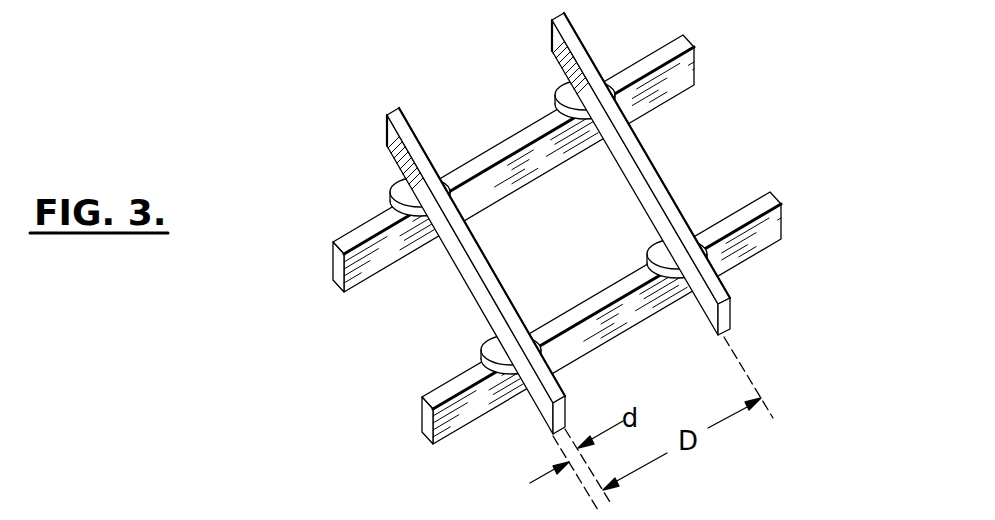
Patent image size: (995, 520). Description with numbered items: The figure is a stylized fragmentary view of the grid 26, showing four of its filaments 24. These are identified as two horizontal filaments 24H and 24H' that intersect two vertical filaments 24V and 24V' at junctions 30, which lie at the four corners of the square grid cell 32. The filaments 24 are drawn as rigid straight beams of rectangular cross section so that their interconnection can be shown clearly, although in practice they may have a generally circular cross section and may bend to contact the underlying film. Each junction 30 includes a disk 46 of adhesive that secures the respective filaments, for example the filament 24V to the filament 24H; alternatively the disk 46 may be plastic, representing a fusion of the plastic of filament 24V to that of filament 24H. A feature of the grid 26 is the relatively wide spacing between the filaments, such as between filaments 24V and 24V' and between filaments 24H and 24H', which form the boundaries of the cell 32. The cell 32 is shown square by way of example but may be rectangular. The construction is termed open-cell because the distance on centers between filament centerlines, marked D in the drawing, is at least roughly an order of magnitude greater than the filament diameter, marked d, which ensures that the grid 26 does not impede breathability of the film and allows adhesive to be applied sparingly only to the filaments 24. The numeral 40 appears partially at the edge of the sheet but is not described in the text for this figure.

The filament 24 is at (576, 237).
The vertical filament 24V is at (432, 256).
The vertical filament 24V' is at (572, 174).
The horizontal filament 24H is at (559, 163).
The horizontal filament 24H' is at (637, 318).
The grid 26 is at (576, 230).
The junction 30 is at (556, 94).
The grid cell 32 is at (615, 215).
The grid structure 40 is at (848, 7).
The disk 46 is at (396, 186).